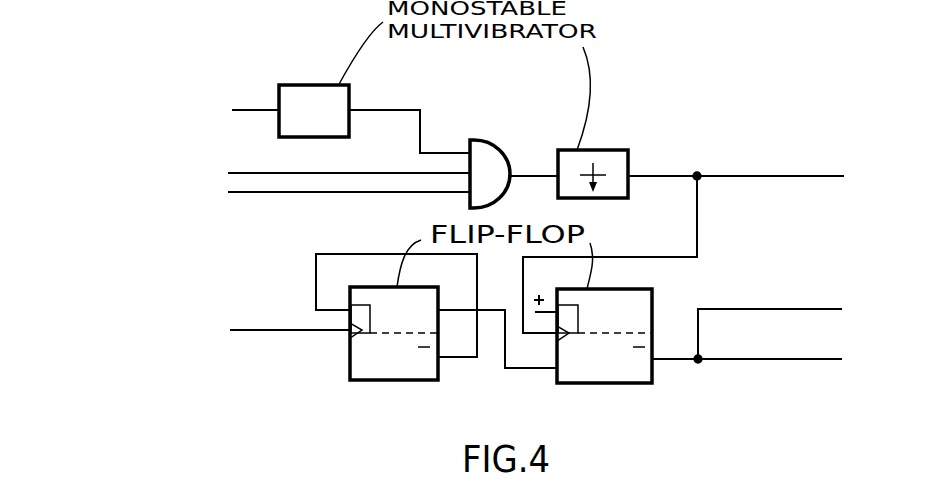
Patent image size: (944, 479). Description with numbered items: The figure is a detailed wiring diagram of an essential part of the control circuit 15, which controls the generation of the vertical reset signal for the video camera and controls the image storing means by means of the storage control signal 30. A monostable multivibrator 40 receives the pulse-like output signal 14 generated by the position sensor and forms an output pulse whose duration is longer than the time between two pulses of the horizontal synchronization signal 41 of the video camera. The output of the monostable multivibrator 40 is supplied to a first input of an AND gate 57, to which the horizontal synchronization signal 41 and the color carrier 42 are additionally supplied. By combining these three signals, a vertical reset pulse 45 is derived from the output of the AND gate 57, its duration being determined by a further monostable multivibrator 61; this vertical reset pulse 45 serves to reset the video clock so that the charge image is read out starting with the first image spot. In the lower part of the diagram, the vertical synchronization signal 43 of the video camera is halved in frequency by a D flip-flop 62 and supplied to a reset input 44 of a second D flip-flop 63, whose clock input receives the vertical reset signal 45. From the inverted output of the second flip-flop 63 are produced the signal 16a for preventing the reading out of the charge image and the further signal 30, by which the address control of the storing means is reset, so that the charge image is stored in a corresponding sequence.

The pulse-like output signal 14 is at (250, 110).
The monostable multivibrator 40 is at (307, 89).
The control circuit 15 is at (424, 95).
The horizontal synchronization signal 41 is at (337, 174).
The color carrier 42 is at (285, 193).
The AND gate 57 is at (490, 141).
The further monostable multivibrator 61 is at (611, 150).
The vertical reset pulse 45 is at (761, 176).
The vertical synchronization signal 43 is at (295, 331).
The D flip-flop 62 is at (385, 381).
The reset input 44 is at (528, 369).
The second D flip-flop 63 is at (615, 384).
The signal for preventing the reading out of the charge image 16a is at (767, 309).
The storage control signal 30 is at (765, 359).